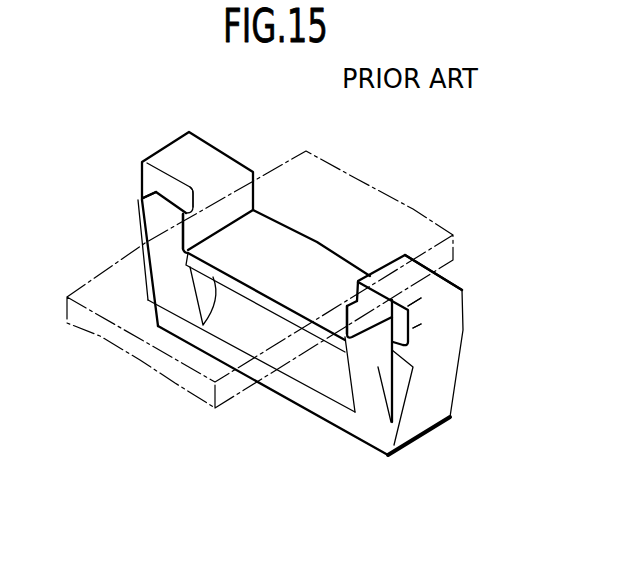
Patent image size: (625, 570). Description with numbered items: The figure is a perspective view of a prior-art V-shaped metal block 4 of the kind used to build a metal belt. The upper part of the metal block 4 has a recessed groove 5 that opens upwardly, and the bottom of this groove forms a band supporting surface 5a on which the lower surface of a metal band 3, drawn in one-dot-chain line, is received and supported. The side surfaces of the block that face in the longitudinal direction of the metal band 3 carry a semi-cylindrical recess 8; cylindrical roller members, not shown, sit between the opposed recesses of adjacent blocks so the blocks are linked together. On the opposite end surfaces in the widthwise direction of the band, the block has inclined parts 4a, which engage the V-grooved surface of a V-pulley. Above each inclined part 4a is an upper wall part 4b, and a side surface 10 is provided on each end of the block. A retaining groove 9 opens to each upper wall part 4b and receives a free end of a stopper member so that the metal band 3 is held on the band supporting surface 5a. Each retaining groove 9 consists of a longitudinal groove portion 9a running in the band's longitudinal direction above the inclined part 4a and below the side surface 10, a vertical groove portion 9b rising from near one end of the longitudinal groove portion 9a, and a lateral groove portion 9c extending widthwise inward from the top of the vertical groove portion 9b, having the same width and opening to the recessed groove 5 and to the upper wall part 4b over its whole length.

The metal band 3 is at (301, 150).
The V-shaped metal block 4 is at (315, 414).
The inclined part 4a is at (150, 289).
The upper wall part 4b is at (203, 153).
The recessed groove 5 is at (227, 188).
The band supporting surface 5a is at (310, 257).
The semi-cylindrical recess 8 is at (293, 373).
The retaining groove 9 is at (517, 263).
The longitudinal groove portion 9a is at (143, 206).
The vertical groove portion 9b is at (145, 200).
The lateral groove portion 9c is at (172, 182).
The side surface 10 is at (443, 297).